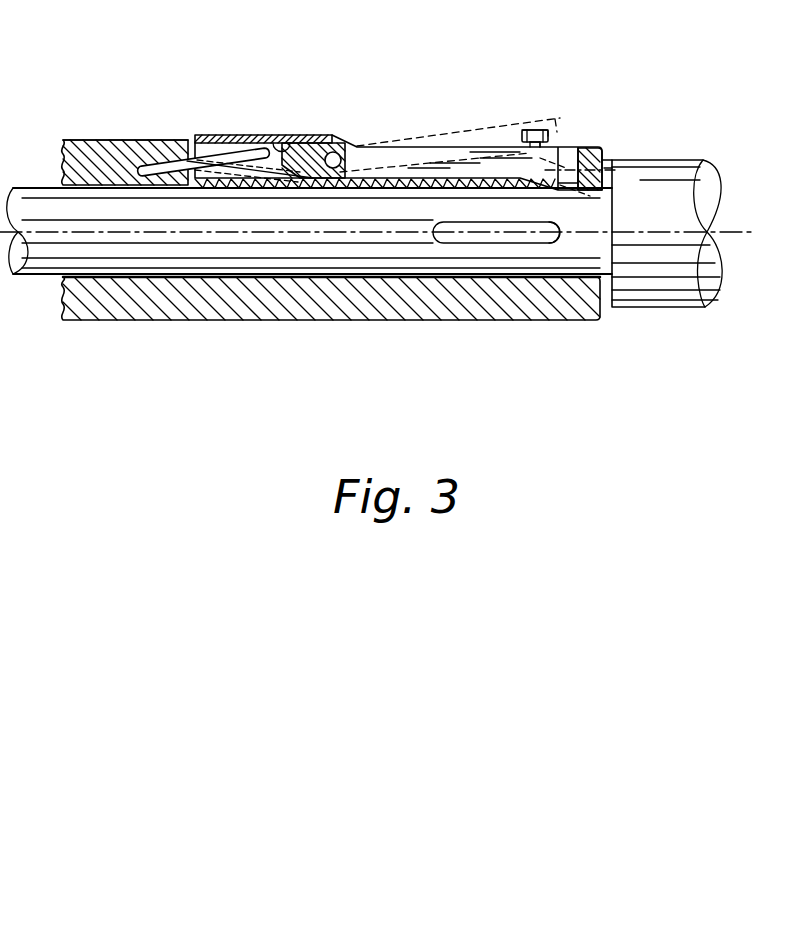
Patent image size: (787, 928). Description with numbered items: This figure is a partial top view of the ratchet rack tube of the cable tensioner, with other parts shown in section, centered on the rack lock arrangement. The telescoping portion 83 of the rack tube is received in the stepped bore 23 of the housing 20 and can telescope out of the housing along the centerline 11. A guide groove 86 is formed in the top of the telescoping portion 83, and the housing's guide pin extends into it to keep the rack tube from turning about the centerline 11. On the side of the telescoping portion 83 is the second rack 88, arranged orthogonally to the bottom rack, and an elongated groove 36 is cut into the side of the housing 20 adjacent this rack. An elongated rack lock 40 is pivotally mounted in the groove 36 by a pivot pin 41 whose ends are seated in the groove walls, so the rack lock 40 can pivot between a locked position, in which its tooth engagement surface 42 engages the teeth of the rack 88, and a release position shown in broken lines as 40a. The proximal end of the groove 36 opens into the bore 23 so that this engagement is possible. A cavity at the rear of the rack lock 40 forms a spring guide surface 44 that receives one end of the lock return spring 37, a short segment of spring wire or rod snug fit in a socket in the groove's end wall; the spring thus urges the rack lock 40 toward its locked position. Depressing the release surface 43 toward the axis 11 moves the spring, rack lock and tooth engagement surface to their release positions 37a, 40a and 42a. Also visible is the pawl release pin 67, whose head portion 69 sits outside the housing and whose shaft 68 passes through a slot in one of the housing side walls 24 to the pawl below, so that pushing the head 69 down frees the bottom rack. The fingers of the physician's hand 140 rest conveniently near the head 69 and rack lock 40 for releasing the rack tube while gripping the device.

The centerline 11 is at (740, 235).
The housing 20 is at (363, 321).
The stepped bore 23 is at (97, 188).
The housing side wall 24 is at (0, 491).
The elongated groove 36 is at (220, 190).
The lock return spring 37 is at (165, 142).
The return spring release position 37a is at (250, 140).
The rack lock 40 is at (405, 147).
The rack lock release position 40a is at (442, 128).
The pivot pin 41 is at (332, 143).
The tooth engagement surface 42 is at (548, 186).
The tooth engagement surface release position 42a is at (598, 178).
The release surface 43 is at (222, 135).
The spring guide surface 44 is at (290, 140).
The pawl release pin 67 is at (550, 133).
The shaft 68 is at (546, 144).
The head portion 69 is at (528, 129).
The telescoping portion 83 is at (52, 252).
The guide groove 86 is at (455, 240).
The second rack 88 is at (505, 195).
The hand 140 is at (0, 665).